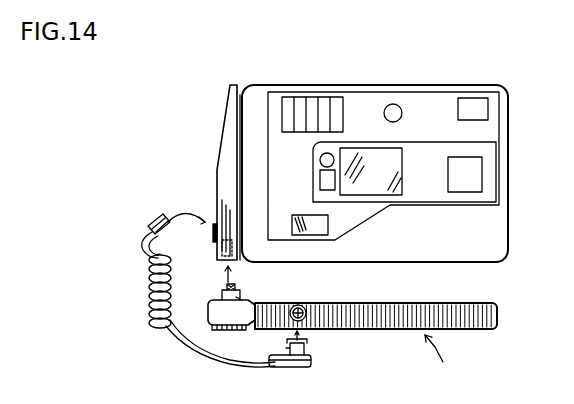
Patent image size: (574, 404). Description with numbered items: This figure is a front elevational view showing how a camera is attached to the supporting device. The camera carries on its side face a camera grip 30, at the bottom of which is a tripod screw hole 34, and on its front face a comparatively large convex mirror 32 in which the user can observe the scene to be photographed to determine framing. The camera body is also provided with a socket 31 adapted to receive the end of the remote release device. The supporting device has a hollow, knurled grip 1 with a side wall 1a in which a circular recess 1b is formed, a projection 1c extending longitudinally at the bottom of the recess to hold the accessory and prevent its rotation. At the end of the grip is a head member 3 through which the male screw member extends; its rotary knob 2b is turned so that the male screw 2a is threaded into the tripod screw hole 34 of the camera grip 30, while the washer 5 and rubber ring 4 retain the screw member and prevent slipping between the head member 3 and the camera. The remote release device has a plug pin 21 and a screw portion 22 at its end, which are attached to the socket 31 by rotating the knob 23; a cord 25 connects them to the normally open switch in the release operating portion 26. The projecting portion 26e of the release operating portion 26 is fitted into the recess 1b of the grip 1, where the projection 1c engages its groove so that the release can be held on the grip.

The grip 1 is at (443, 355).
The side wall 1a is at (375, 305).
The circular recess 1b is at (303, 328).
The projection 1c is at (298, 305).
The male screw 2a is at (224, 292).
The rotary knob 2b is at (228, 330).
The head member 3 is at (286, 348).
The rubber ring 4 is at (240, 297).
The washer 5 is at (208, 303).
The plug pin 21 is at (170, 220).
The screw portion 22 is at (155, 218).
The knob 23 is at (145, 222).
The cord 25 is at (208, 352).
The release operating portion 26 is at (306, 368).
The projecting portion 26e is at (306, 348).
The camera grip 30 is at (222, 125).
The socket 31 is at (213, 233).
The convex mirror 32 is at (400, 172).
The tripod screw hole 34 is at (222, 252).